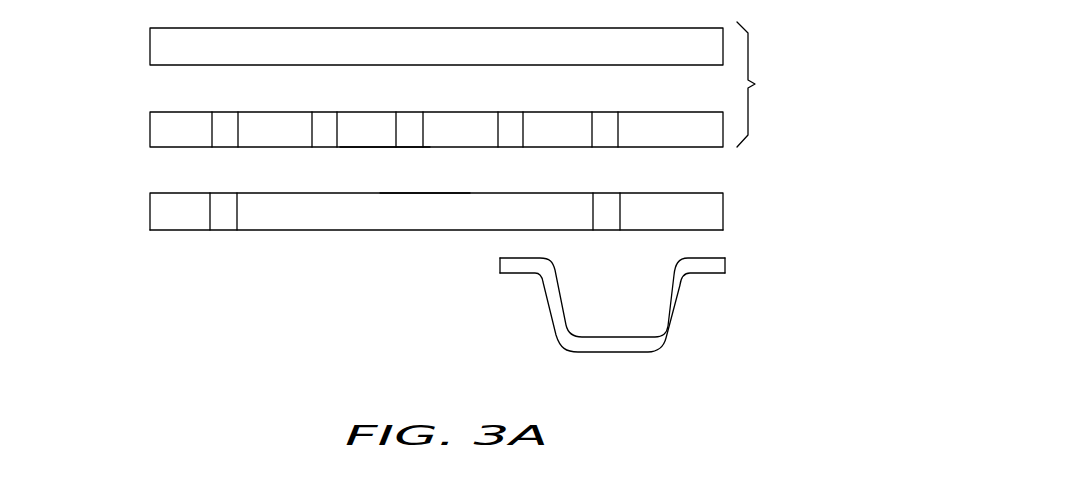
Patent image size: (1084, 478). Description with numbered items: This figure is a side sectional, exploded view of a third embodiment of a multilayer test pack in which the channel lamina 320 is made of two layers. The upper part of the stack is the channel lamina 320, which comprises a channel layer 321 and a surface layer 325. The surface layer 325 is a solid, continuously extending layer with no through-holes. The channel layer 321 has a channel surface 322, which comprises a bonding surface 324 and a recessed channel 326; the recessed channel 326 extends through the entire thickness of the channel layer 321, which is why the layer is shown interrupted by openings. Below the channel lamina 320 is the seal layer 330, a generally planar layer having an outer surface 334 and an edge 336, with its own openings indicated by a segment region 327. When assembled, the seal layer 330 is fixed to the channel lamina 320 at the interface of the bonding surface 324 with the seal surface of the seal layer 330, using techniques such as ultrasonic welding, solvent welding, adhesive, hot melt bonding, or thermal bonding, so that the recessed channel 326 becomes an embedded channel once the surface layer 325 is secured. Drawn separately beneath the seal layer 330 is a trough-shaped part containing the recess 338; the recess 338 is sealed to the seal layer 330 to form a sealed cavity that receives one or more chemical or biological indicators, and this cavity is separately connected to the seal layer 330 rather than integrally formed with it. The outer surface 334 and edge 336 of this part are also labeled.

The channel lamina 320 is at (770, 84).
The channel layer 321 is at (158, 127).
The channel surface 322 is at (383, 193).
The bonding surface 324 is at (385, 147).
The surface layer 325 is at (157, 42).
The recessed channel 326 is at (526, 102).
The segment region 327 is at (503, 187).
The seal layer 330 is at (166, 180).
The outer surface 334 is at (357, 230).
The edge 336 is at (155, 210).
The recess 338 is at (608, 310).